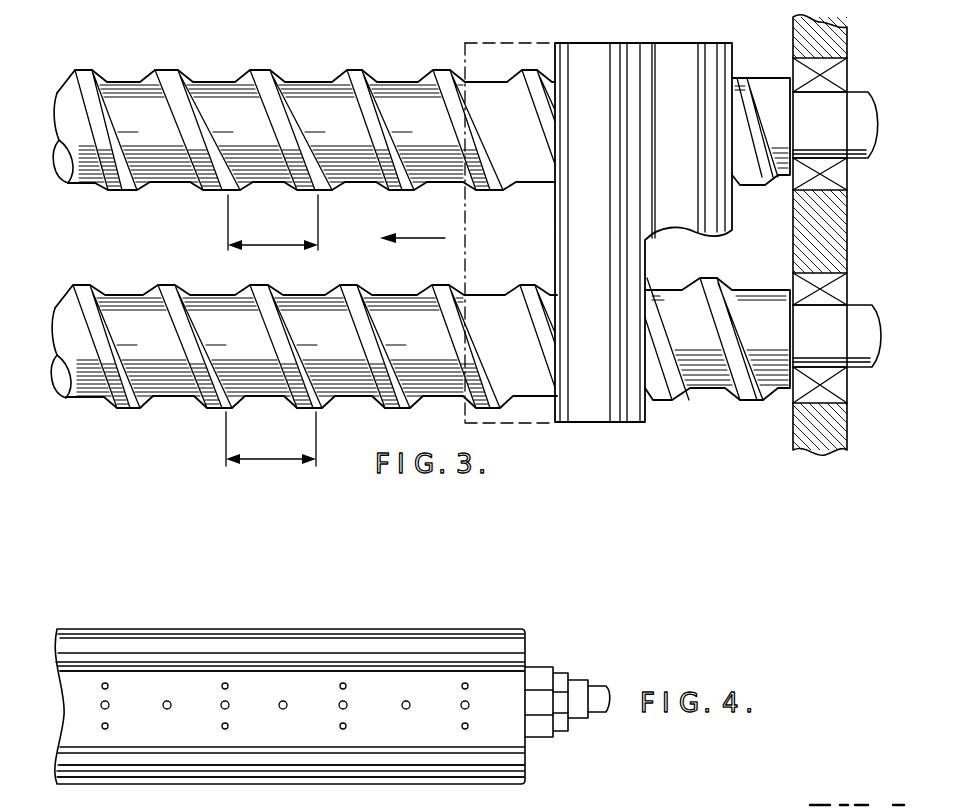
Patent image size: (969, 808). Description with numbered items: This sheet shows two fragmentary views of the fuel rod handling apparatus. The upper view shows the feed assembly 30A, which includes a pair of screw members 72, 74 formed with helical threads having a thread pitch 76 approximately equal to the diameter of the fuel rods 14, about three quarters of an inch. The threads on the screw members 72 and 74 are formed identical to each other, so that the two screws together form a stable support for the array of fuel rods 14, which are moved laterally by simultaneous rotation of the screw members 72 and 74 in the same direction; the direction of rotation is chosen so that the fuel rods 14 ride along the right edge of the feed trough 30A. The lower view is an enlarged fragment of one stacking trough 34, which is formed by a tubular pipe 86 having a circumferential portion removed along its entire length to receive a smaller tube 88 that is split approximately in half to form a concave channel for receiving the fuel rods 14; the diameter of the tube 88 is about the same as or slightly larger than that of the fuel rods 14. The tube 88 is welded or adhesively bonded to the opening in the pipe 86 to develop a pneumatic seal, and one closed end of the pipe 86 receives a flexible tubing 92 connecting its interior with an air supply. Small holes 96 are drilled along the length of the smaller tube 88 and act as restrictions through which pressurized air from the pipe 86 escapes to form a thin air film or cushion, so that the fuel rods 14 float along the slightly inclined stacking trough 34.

In FIG. 3, the fuel rods 14 is at (529, 43).
In FIG. 3, the feed assembly 30A is at (387, 62).
In FIG. 3, the screw member 72 is at (167, 176).
In FIG. 3, the screw member 74 is at (311, 306).
In FIG. 3, the thread pitch 76 is at (268, 245).
In FIG. 4, the stacking trough 34 is at (337, 715).
In FIG. 4, the tubular pipe 86 is at (449, 771).
In FIG. 4, the smaller tube 88 is at (300, 736).
In FIG. 4, the flexible tubing 92 is at (597, 690).
In FIG. 4, the holes 96 is at (285, 705).